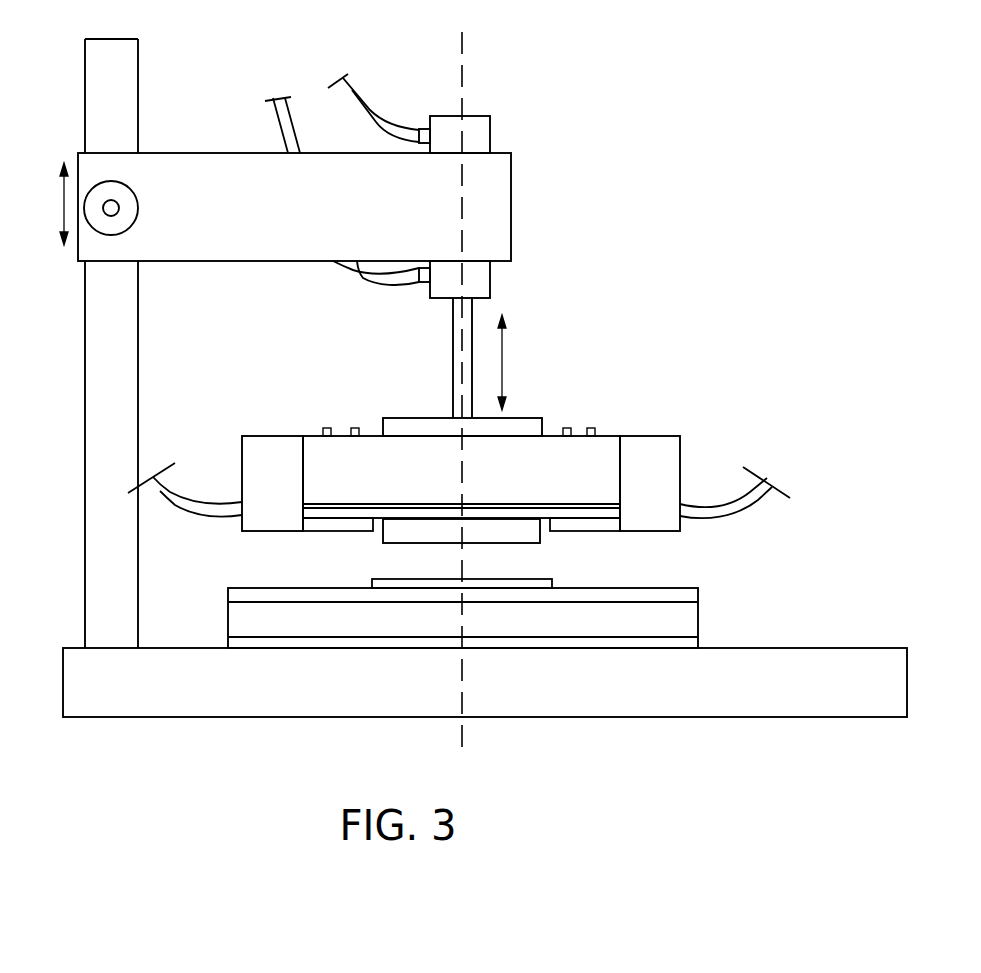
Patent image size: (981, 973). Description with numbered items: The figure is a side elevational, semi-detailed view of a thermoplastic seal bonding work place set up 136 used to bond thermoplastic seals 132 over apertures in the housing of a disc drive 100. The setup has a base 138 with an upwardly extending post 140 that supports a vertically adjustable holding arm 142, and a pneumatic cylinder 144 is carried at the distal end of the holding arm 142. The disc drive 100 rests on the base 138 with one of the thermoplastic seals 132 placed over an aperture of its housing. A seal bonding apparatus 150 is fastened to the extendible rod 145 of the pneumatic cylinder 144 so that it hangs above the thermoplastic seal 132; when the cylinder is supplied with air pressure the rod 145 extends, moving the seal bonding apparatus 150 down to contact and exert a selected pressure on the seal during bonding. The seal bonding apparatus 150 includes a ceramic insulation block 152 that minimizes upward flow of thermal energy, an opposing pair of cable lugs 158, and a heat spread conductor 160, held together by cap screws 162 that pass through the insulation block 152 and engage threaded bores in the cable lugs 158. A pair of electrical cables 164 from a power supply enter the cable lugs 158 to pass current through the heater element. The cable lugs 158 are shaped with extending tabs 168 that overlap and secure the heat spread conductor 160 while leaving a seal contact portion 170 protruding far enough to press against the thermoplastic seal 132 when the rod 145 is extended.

The disc drive 100 is at (665, 587).
The thermoplastic seal 132 is at (537, 580).
The work place set up 136 is at (582, 113).
The base 138 is at (758, 657).
The post 140 is at (97, 463).
The holding arm 142 is at (177, 173).
The pneumatic cylinder 144 is at (480, 123).
The extendible rod 145 is at (455, 345).
The seal bonding apparatus 150 is at (588, 410).
The insulation block 152 is at (325, 450).
The cable lugs 158 is at (258, 476).
The heat spread conductor 160 is at (400, 533).
The cap screws 162 is at (356, 428).
The electrical cables 164 is at (208, 517).
The extending tabs 168 is at (337, 533).
The seal contact portion 170 is at (418, 537).